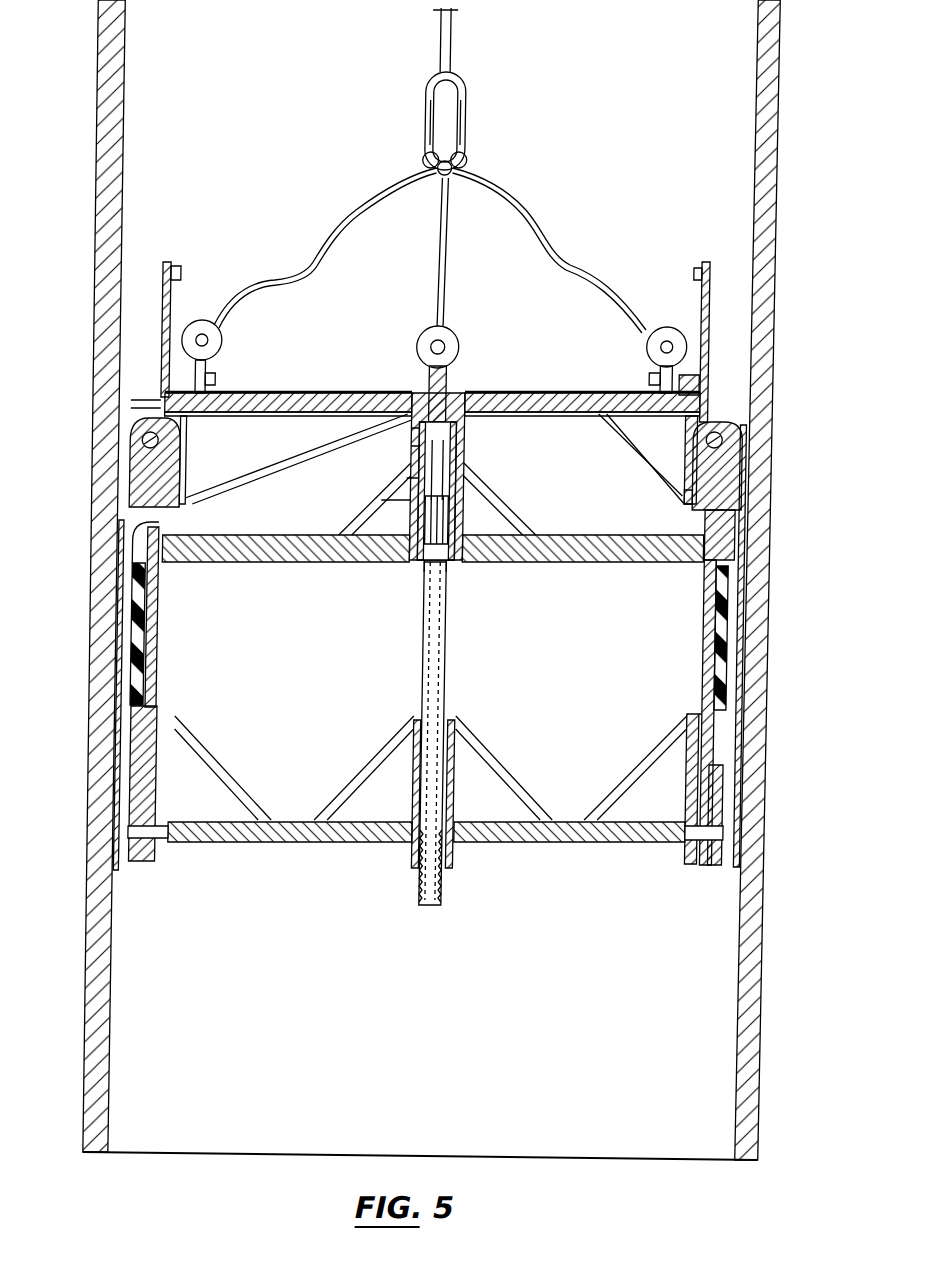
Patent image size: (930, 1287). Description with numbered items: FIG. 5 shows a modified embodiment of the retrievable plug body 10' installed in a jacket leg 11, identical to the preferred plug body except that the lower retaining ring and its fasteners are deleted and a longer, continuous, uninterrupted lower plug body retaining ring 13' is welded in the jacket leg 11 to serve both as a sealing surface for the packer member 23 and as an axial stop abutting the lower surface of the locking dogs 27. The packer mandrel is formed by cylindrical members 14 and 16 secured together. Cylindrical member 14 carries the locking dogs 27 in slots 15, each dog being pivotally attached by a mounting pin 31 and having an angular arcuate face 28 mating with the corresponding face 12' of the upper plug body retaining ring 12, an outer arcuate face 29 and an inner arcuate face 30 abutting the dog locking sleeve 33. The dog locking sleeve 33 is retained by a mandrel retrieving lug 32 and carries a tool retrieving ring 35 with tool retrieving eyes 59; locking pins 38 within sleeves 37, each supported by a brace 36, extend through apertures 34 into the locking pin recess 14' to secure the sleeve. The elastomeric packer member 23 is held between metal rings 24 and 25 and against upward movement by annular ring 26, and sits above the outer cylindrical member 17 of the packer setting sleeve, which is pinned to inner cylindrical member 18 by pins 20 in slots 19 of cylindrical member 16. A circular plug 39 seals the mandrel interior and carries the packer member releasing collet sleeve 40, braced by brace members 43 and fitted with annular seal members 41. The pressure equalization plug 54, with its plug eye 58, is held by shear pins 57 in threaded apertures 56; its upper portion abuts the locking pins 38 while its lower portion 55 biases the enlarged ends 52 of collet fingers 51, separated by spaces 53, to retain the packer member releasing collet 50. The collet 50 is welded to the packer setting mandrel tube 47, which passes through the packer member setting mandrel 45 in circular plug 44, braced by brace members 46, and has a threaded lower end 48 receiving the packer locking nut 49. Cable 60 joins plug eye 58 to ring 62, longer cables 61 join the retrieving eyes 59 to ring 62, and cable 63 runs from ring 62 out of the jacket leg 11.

The jacket leg 11 is at (772, 58).
The cable 63 is at (443, 45).
The ring 62 is at (460, 94).
The plug body 10' is at (495, 148).
The cables 61 is at (312, 228).
The cable 60 is at (442, 262).
The plug eye 58 is at (456, 347).
The pressure equalization plug 54 is at (446, 385).
The tool retrieving eyes 59 is at (196, 320).
The tool retrieving ring 35 is at (213, 376).
The mandrel retrieving lug 32 is at (688, 272).
The cylindrical member 14 is at (487, 328).
The dog locking sleeve 33 is at (698, 386).
The locking pin recess 14' is at (741, 383).
The sleeves 37 is at (330, 393).
The locking pins 38 is at (255, 411).
The brace 36 is at (230, 452).
The packer member releasing collet sleeve 40 is at (464, 437).
The annular seal members 41 is at (464, 464).
The threaded apertures 56 is at (410, 430).
The shear pins 57 is at (412, 448).
The lower portion 55 is at (456, 492).
The spaces 53 is at (450, 512).
The enlarged ends 52 is at (410, 478).
The collet fingers 51 is at (398, 502).
The brace members 43 is at (345, 528).
The circular plug 39 is at (576, 564).
The packer member releasing collet 50 is at (446, 566).
The angular arcuate peripheral face 28 is at (128, 488).
The mounting pin 31 is at (140, 450).
The apertures 34 is at (130, 400).
The slots 15 is at (130, 407).
The angular arcuate peripheral face 12' is at (767, 466).
The upper plug body retaining ring 12 is at (780, 646).
The inner arcuate peripheral face 30 is at (684, 494).
The outer arcuate peripheral face 29 is at (745, 516).
The locking dogs 27 is at (735, 546).
The metal ring 25 is at (746, 586).
The lower plug body retaining ring 13' is at (475, 695).
The packer member 23 is at (118, 600).
The annular ring 26 is at (130, 546).
The cylindrical member 16 is at (148, 597).
The packer setting mandrel tube 47 is at (447, 646).
The packer member setting mandrel 45 is at (457, 736).
The brace members 46 is at (215, 772).
The inner cylindrical member 18 is at (655, 762).
The circular plug 44 is at (592, 845).
The outer cylindrical member 17 is at (722, 746).
The metal ring 24 is at (748, 745).
The slots 19 is at (706, 784).
The pins 20 is at (722, 856).
The lower end 48 is at (420, 888).
The packer locking nut 49 is at (450, 897).